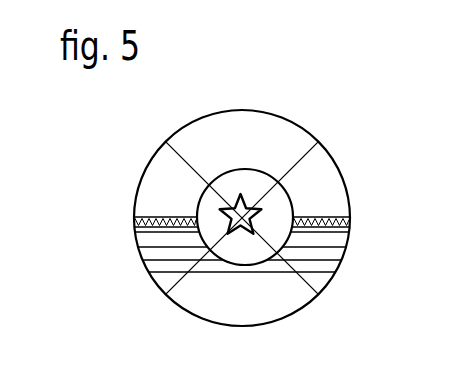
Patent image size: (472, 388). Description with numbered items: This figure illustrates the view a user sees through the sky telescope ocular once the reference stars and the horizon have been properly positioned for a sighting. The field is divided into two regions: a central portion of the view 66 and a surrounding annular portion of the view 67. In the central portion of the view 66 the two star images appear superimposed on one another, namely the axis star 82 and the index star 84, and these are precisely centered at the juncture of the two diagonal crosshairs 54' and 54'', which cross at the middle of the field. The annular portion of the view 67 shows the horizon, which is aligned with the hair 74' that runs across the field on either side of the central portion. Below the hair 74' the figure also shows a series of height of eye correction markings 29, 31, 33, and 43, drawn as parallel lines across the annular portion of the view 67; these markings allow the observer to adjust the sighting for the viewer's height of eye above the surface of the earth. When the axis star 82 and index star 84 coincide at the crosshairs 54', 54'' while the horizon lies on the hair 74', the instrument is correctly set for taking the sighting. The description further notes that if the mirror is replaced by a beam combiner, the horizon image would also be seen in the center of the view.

The annular portion of the view 67 is at (208, 131).
The central portion of the view 66 is at (213, 203).
The hair 74' is at (206, 196).
The height of eye correction marking 29 is at (138, 224).
The height of eye correction marking 31 is at (146, 247).
The height of eye correction marking 33 is at (150, 260).
The height of eye correction marking 43 is at (157, 272).
The crosshair 54'' is at (274, 210).
The crosshair 54' is at (270, 241).
The axis star 82 is at (161, 278).
The index star 84 is at (242, 228).